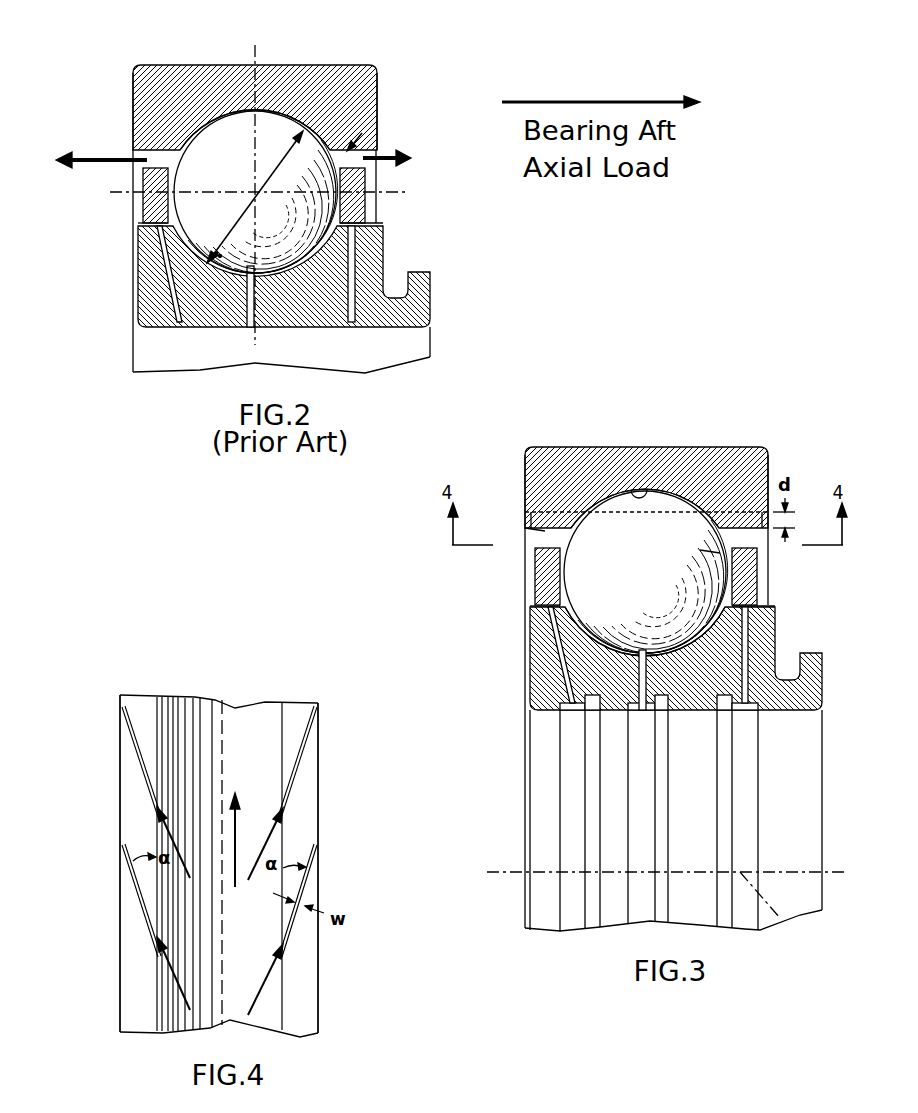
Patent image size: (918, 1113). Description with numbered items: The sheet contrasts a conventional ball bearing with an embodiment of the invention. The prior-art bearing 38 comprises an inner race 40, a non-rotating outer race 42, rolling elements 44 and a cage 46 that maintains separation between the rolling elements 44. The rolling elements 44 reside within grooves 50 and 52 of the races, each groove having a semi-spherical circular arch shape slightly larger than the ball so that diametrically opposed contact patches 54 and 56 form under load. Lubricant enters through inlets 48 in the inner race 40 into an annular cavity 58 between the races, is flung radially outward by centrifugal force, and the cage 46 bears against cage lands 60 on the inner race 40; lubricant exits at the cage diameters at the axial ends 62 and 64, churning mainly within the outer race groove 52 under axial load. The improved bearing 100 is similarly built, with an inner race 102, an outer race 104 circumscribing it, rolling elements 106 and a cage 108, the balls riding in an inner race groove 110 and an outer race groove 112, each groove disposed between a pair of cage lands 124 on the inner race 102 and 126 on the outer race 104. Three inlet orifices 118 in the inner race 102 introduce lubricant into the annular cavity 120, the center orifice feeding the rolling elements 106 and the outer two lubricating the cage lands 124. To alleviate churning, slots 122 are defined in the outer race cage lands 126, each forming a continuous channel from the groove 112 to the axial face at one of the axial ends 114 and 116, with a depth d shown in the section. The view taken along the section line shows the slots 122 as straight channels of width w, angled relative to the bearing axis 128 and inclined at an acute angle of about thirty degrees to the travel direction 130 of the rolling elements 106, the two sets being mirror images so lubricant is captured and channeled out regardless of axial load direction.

In FIG. 2, the bearing 38 is at (78, 121).
In FIG. 2, the inner race 40 is at (152, 297).
In FIG. 2, the outer race 42 is at (290, 65).
In FIG. 2, the rolling elements 44 is at (206, 138).
In FIG. 2, the cage 46 is at (345, 184).
In FIG. 2, the inlets 48 is at (182, 325).
In FIG. 2, the groove 50 is at (220, 250).
In FIG. 2, the groove 52 is at (188, 135).
In FIG. 2, the contact patch 54 is at (221, 255).
In FIG. 2, the contact patch 56 is at (303, 126).
In FIG. 2, the cavity 58 is at (362, 133).
In FIG. 2, the cage lands 60 is at (140, 223).
In FIG. 2, the axial end 62 is at (133, 75).
In FIG. 2, the axial end 64 is at (378, 75).
In FIG. 3, the bearing 100 is at (703, 418).
In FIG. 3, the inner race 102 is at (538, 682).
In FIG. 3, the outer race 104 is at (658, 450).
In FIG. 4, the outer race 104 is at (104, 675).
In FIG. 3, the rolling elements 106 is at (668, 497).
In FIG. 3, the cage 108 is at (758, 573).
In FIG. 3, the groove 110 is at (587, 634).
In FIG. 3, the groove 112 is at (633, 489).
In FIG. 4, the groove 112 is at (235, 720).
In FIG. 3, the axial end 114 is at (525, 457).
In FIG. 4, the axial end 114 is at (121, 808).
In FIG. 3, the axial end 116 is at (768, 455).
In FIG. 4, the axial end 116 is at (319, 802).
In FIG. 3, the inlet orifices 118 is at (578, 708).
In FIG. 3, the cavity 120 is at (545, 541).
In FIG. 3, the slots 122 is at (574, 493).
In FIG. 4, the slots 122 is at (128, 742).
In FIG. 3, the cage lands 124 is at (530, 606).
In FIG. 3, the cage lands 126 is at (545, 531).
In FIG. 4, the cage lands 126 is at (133, 942).
In FIG. 3, the axis 128 is at (780, 918).
In FIG. 4, the direction 130 is at (235, 887).